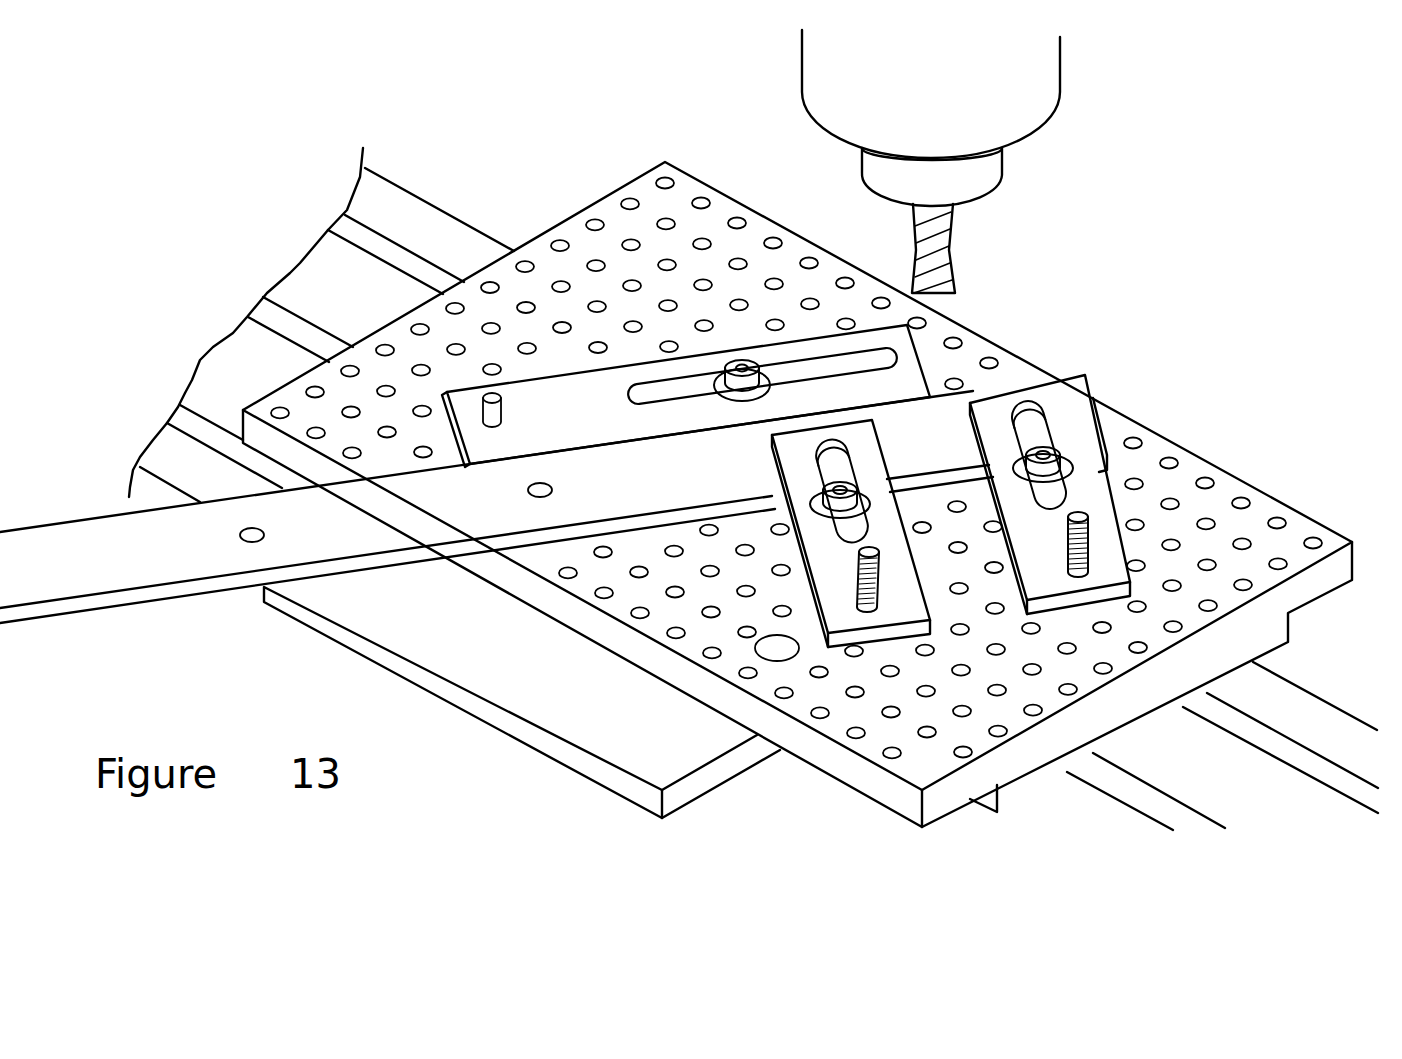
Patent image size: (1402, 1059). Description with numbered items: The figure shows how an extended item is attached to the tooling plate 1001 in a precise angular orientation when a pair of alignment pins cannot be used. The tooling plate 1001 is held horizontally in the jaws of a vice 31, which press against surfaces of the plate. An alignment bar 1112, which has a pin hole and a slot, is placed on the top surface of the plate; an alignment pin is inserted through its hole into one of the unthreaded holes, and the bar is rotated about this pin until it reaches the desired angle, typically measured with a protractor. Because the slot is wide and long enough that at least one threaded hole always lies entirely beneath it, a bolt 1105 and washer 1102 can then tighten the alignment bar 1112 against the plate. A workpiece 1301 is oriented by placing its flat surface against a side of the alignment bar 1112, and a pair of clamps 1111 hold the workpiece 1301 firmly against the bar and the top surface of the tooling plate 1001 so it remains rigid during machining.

The vice 31 is at (560, 710).
The tooling plate 1001 is at (290, 402).
The washer 1102 is at (707, 372).
The bolt 1105 is at (744, 358).
The clamps 1111 is at (1062, 407).
The alignment bar 1112 is at (707, 363).
The workpiece 1301 is at (210, 562).